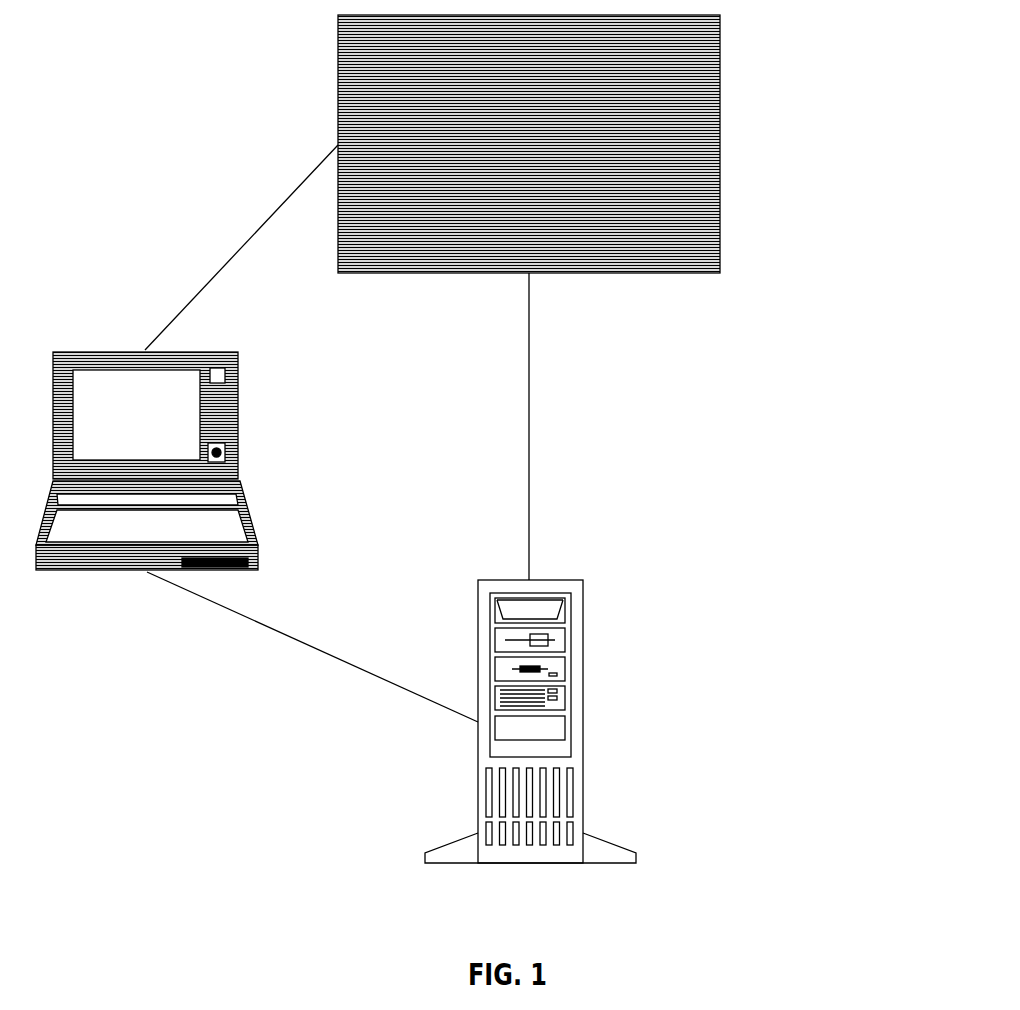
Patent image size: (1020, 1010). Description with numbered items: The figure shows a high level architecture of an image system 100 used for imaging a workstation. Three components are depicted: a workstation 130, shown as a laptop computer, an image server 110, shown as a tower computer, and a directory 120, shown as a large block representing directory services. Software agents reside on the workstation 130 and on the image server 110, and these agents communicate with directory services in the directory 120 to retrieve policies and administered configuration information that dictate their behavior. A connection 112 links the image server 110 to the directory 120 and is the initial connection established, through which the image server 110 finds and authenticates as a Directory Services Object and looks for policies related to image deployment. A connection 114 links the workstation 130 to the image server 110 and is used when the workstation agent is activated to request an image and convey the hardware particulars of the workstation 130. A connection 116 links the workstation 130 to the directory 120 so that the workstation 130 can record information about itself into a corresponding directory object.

The image system 100 is at (837, 562).
The image server 110 is at (587, 638).
The connection 112 is at (529, 388).
The connection 114 is at (310, 640).
The connection 116 is at (268, 216).
The directory 120 is at (663, 272).
The workstation 130 is at (88, 572).